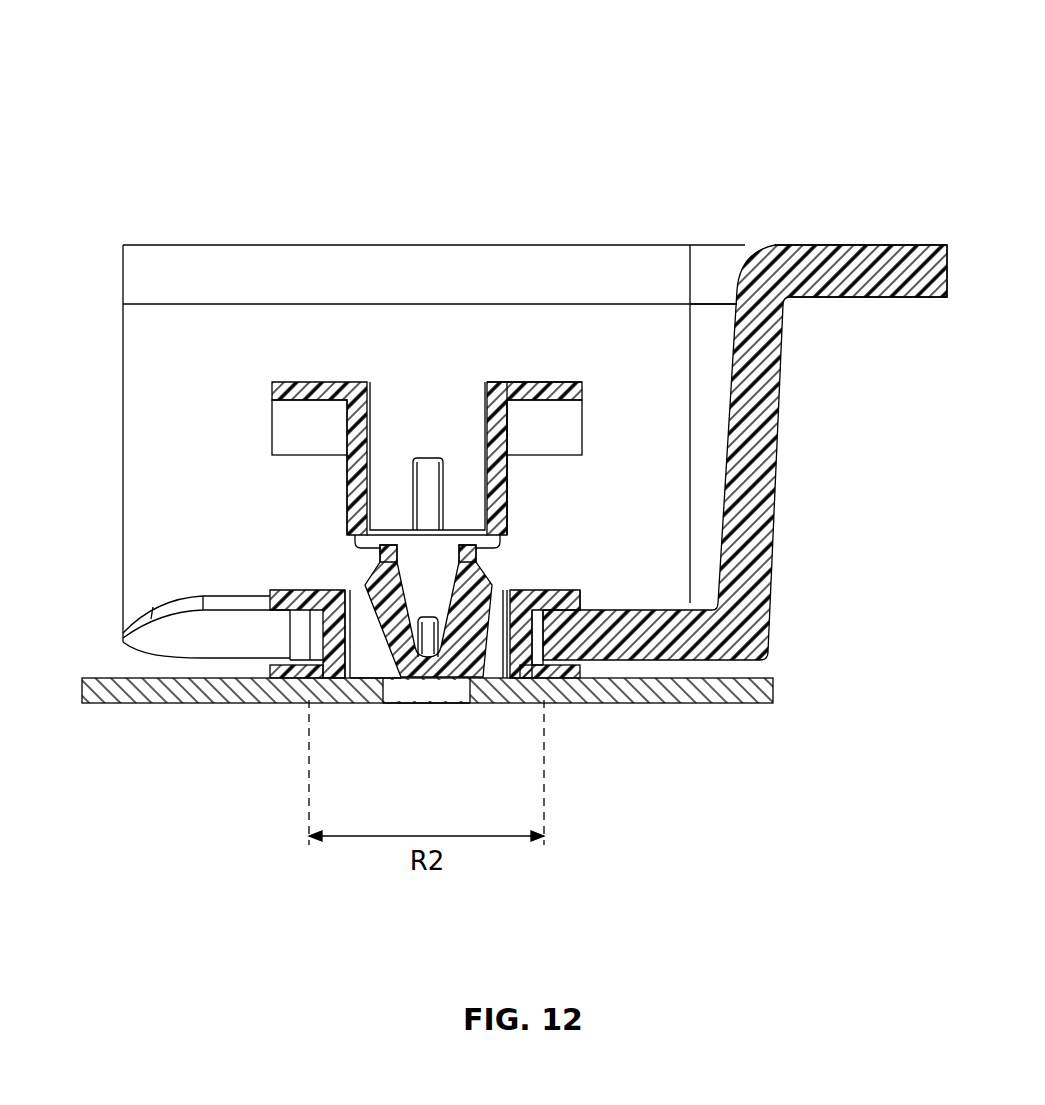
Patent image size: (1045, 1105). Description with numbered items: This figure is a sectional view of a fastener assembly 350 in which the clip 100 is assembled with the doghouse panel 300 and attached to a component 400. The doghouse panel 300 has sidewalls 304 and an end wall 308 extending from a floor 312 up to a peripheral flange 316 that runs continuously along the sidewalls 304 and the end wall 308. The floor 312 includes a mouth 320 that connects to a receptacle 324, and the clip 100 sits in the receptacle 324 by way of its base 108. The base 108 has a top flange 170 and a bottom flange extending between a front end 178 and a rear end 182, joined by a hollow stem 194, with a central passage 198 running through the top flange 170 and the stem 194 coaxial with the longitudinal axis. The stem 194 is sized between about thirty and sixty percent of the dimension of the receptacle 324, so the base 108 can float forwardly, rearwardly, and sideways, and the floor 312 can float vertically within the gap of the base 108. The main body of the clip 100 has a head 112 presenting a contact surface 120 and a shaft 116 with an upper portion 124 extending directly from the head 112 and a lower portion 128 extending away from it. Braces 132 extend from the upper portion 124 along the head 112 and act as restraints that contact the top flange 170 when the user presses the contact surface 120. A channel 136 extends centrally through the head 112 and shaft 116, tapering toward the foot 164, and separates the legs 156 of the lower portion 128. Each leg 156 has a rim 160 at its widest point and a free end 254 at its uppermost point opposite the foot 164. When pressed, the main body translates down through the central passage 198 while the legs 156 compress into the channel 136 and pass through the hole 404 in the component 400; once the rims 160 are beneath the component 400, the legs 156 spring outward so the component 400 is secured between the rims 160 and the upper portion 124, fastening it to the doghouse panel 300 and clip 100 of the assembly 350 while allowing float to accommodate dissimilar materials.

The assembly 350 is at (125, 76).
The doghouse panel 300 is at (678, 278).
The sidewalls 304 is at (550, 328).
The end wall 308 is at (752, 485).
The peripheral flange 316 is at (853, 263).
The clip 100 is at (312, 380).
The braces 132 is at (290, 425).
The shaft 116 is at (386, 380).
The head 112 is at (523, 380).
The contact surface 120 is at (570, 380).
The channel 136 is at (421, 412).
The upper portion 124 is at (357, 470).
The lower portion 128 is at (477, 503).
The rim 160 is at (368, 585).
The free end 254 is at (380, 546).
The foot 164 is at (445, 672).
The legs 156 is at (352, 610).
The top flange 170 is at (590, 602).
The base 108 is at (313, 668).
The rear end 182 is at (288, 672).
The front end 178 is at (580, 673).
The stem 194 is at (510, 662).
The receptacle 324 is at (557, 652).
The central passage 198 is at (372, 669).
The floor 312 is at (177, 630).
The mouth 320 is at (132, 638).
The component 400 is at (207, 690).
The hole 404 is at (400, 703).